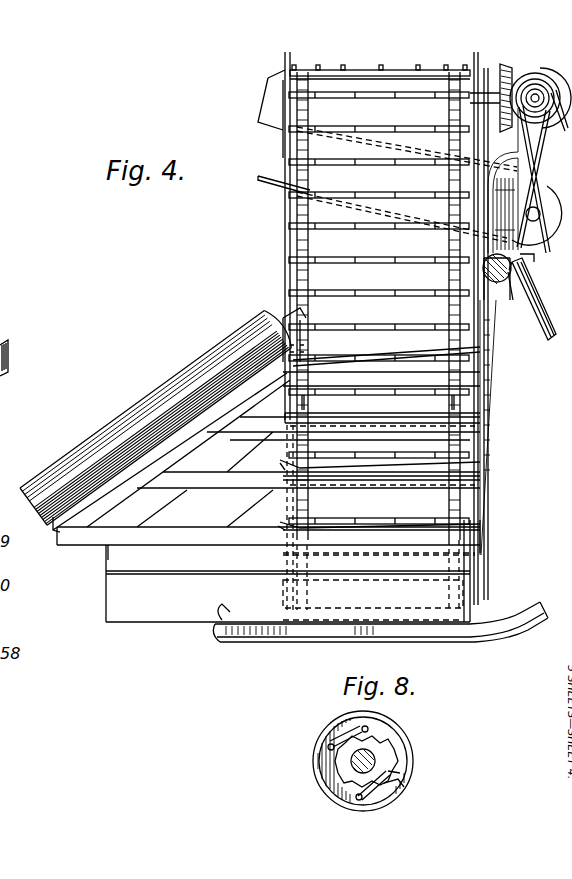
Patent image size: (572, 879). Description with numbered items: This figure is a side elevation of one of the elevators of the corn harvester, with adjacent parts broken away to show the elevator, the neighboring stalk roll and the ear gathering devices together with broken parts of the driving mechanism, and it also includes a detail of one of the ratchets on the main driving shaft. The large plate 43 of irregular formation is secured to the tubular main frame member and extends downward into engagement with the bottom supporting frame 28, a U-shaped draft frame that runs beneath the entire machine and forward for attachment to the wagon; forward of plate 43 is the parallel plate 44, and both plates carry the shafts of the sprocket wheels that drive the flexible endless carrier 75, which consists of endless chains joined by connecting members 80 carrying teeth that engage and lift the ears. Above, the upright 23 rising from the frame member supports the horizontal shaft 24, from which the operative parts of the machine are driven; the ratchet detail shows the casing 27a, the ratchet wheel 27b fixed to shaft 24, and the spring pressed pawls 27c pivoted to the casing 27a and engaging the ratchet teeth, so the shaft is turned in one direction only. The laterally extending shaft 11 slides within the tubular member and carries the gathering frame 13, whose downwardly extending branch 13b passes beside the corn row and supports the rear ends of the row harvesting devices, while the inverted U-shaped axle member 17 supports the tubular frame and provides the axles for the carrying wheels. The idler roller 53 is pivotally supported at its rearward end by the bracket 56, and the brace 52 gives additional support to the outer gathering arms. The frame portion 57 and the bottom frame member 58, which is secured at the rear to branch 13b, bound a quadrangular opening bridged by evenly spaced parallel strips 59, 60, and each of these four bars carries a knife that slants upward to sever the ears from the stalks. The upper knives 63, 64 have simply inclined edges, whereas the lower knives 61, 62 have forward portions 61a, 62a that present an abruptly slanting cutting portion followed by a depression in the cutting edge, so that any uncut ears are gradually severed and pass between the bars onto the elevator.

In FIG. 4, the plate 43 is at (470, 63).
In FIG. 4, the connecting members 80 is at (358, 92).
In FIG. 4, the plate 44 is at (283, 165).
In FIG. 4, the upright 23 is at (500, 160).
In FIG. 4, the horizontal shaft 24 is at (500, 103).
In FIG. 8, the horizontal shaft 24 is at (376, 761).
In FIG. 4, the gathering frame 13 is at (483, 269).
In FIG. 4, the shaft 11 is at (486, 260).
In FIG. 4, the axle member 17 is at (532, 297).
In FIG. 4, the branch 13b is at (490, 345).
In FIG. 4, the upper knife 64 is at (432, 355).
In FIG. 4, the frame portion 57 is at (437, 370).
In FIG. 4, the idler roller 53 is at (188, 368).
In FIG. 4, the bracket 56 is at (285, 310).
In FIG. 4, the endless carrier 75 is at (310, 404).
In FIG. 4, the upper knife 63 is at (465, 418).
In FIG. 4, the strip 59 is at (465, 438).
In FIG. 4, the forward portion of knife 62a is at (285, 468).
In FIG. 4, the lower knife 62 is at (470, 467).
In FIG. 4, the strip 60 is at (476, 485).
In FIG. 4, the forward portion of knife 61a is at (285, 522).
In FIG. 4, the lower knife 61 is at (470, 527).
In FIG. 4, the bottom frame member 58 is at (200, 540).
In FIG. 4, the bottom supporting frame 28 is at (490, 643).
In FIG. 4, the brace 52 is at (0, 398).
In FIG. 8, the ratchet casing 27a is at (322, 745).
In FIG. 8, the ratchet wheel 27b is at (338, 766).
In FIG. 8, the spring pressed pawls 27c is at (368, 733).